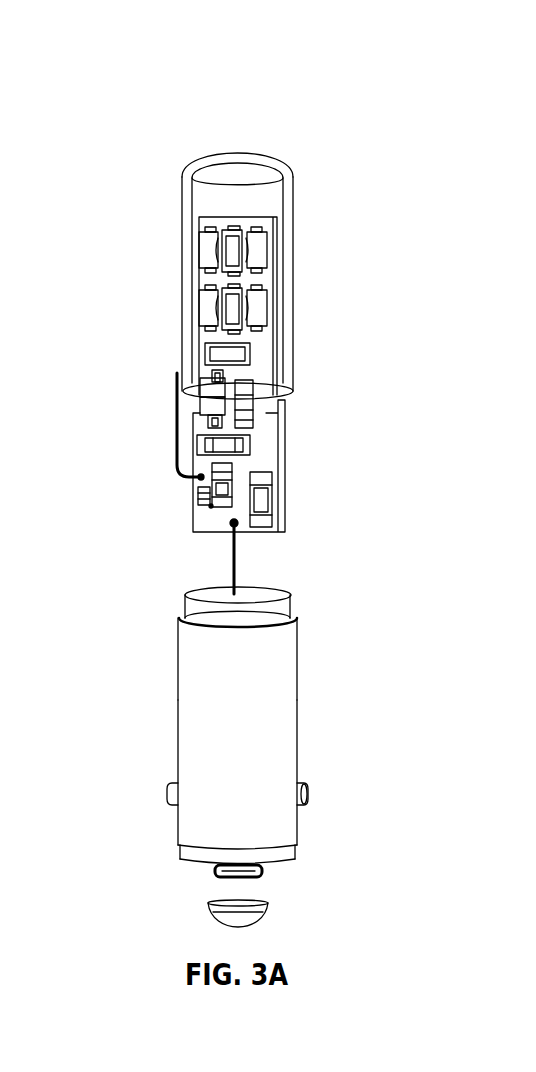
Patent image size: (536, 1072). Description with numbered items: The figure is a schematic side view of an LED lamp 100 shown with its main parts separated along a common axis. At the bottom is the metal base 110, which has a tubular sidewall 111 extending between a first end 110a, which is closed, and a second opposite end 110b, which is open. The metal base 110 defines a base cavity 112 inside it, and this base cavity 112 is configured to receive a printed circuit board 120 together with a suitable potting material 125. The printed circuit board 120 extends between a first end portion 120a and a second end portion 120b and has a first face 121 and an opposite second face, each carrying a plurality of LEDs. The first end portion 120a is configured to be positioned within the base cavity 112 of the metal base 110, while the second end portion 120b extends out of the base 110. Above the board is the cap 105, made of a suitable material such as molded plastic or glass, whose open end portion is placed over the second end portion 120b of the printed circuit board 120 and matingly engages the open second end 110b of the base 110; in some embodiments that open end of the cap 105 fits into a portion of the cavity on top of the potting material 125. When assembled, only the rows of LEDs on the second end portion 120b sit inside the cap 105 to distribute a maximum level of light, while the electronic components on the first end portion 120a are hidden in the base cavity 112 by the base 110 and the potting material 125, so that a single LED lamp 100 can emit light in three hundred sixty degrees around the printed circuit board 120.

The LED lamp 100 is at (149, 143).
The cap 105 is at (238, 153).
The printed circuit board 120 is at (268, 433).
The second end portion 120b is at (275, 223).
The first end portion 120a is at (285, 517).
The first face 121 is at (203, 520).
The potting material 125 is at (287, 603).
The base cavity 112 is at (176, 603).
The metal base 110 is at (155, 617).
The second end 110b is at (283, 660).
The tubular sidewall 111 is at (250, 735).
The first end 110a is at (287, 825).